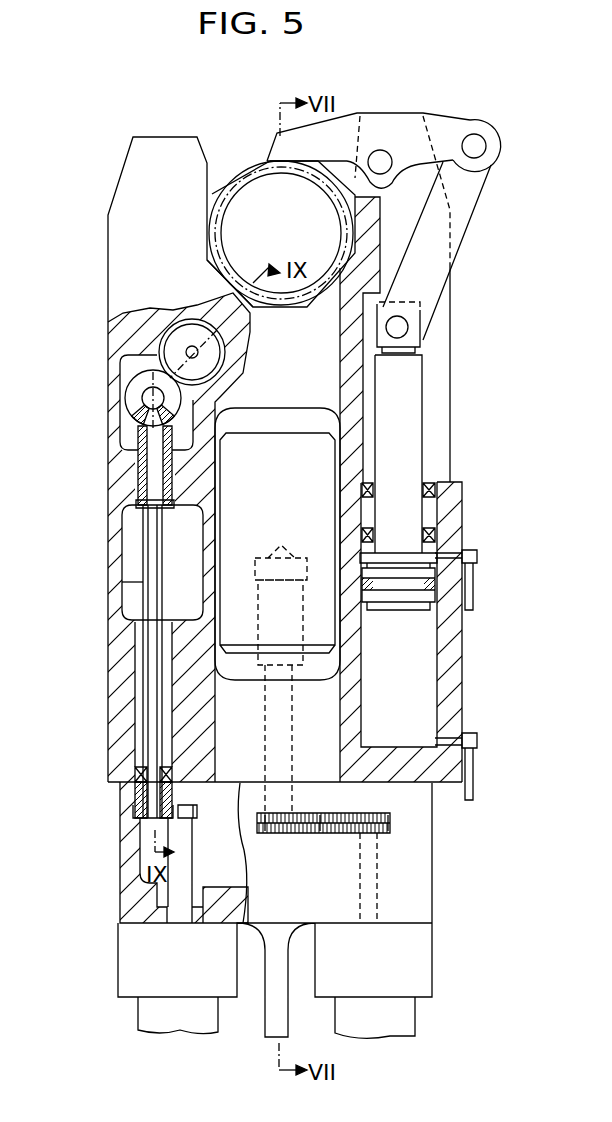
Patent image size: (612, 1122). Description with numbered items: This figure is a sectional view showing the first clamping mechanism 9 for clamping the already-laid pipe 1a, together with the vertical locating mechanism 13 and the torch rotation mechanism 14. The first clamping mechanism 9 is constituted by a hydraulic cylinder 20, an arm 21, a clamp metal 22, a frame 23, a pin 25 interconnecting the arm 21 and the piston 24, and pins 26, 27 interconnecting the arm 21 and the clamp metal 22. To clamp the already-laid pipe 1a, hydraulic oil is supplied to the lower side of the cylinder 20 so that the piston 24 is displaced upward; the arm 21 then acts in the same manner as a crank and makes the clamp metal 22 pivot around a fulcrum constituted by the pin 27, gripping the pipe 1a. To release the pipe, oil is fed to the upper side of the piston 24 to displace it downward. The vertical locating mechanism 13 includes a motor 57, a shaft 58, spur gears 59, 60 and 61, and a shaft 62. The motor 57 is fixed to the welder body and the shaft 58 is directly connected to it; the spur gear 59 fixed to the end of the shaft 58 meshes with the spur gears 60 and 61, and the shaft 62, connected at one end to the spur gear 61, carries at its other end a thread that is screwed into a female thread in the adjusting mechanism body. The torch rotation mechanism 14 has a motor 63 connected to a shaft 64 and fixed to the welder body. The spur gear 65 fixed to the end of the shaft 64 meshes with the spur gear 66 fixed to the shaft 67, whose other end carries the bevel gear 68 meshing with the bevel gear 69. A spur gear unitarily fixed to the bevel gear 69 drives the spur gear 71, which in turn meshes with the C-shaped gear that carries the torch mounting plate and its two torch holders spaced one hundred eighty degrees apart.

The already-laid pipe 1a is at (227, 187).
The first clamping mechanism 9 is at (412, 511).
The vertical locating mechanism 13 is at (292, 690).
The torch rotation mechanism 14 is at (153, 540).
The hydraulic cylinder 20 is at (464, 624).
The arm 21 is at (464, 218).
The clamp metal 22 is at (274, 157).
The frame 23 is at (108, 473).
The piston 24 is at (424, 442).
The pin 25 is at (409, 327).
The pin 26 is at (487, 146).
The pin 27 is at (386, 156).
The motor 57 is at (402, 1019).
The shaft 58 is at (379, 880).
The spur gear 59 is at (389, 827).
The spur gear 60 is at (318, 836).
The spur gear 61 is at (272, 834).
The shaft 62 is at (294, 790).
The motor 63 is at (139, 1019).
The shaft 64 is at (140, 845).
The spur gear 65 is at (199, 815).
The spur gear 66 is at (133, 811).
The shaft 67 is at (140, 582).
The bevel gear 68 is at (138, 420).
The bevel gear 69 is at (126, 387).
The spur gear 71 is at (163, 338).